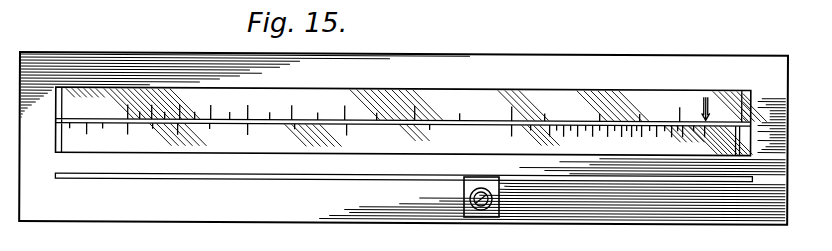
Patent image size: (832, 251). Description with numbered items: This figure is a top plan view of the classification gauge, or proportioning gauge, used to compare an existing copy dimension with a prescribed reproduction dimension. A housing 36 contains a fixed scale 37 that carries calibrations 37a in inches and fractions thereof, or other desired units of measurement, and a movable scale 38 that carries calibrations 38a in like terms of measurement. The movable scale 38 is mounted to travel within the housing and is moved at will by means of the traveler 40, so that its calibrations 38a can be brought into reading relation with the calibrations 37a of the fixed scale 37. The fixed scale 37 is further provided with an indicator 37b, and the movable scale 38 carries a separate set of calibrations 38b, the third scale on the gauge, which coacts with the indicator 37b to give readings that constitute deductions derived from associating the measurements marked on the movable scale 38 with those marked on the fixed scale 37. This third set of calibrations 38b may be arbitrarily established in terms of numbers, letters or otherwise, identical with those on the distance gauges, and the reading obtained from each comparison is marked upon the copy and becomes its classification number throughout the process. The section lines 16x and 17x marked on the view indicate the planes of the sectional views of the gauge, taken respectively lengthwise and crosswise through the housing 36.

The housing 36 is at (532, 62).
The fixed scale 37 is at (559, 106).
The calibrations 37a is at (377, 108).
The indicator 37b is at (707, 94).
The movable scale 38 is at (625, 147).
The calibrations 38a is at (308, 123).
The separate set of calibrations 38b is at (590, 133).
The traveler 40 is at (495, 187).
The section line 16x is at (13, 190).
The section line 17x is at (468, 250).